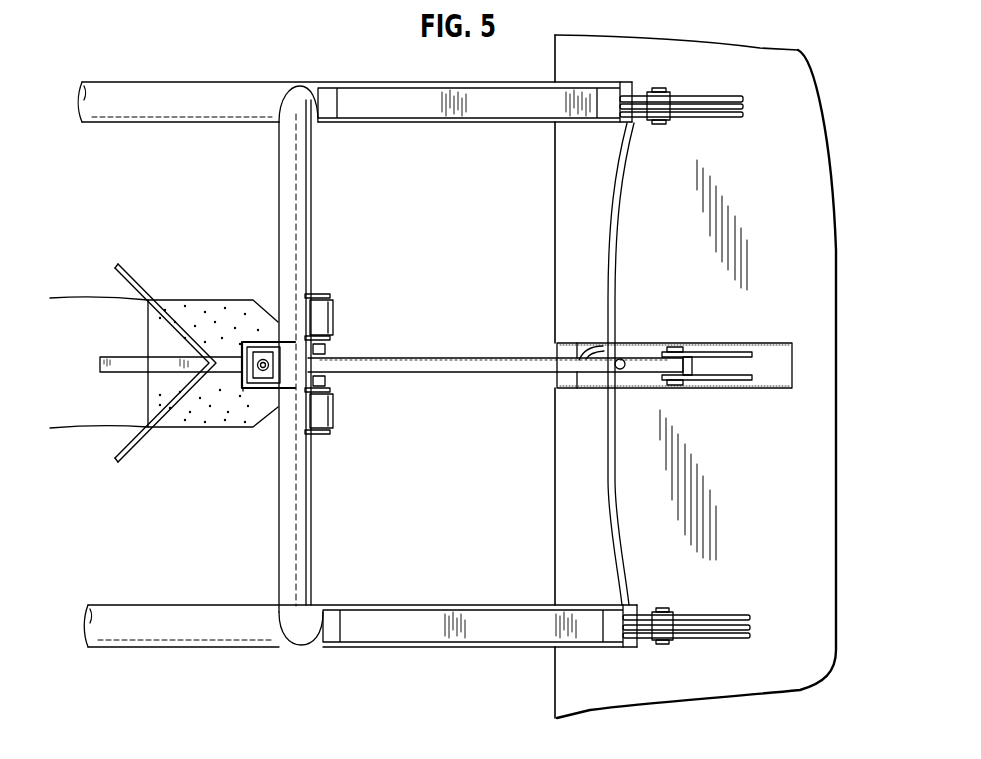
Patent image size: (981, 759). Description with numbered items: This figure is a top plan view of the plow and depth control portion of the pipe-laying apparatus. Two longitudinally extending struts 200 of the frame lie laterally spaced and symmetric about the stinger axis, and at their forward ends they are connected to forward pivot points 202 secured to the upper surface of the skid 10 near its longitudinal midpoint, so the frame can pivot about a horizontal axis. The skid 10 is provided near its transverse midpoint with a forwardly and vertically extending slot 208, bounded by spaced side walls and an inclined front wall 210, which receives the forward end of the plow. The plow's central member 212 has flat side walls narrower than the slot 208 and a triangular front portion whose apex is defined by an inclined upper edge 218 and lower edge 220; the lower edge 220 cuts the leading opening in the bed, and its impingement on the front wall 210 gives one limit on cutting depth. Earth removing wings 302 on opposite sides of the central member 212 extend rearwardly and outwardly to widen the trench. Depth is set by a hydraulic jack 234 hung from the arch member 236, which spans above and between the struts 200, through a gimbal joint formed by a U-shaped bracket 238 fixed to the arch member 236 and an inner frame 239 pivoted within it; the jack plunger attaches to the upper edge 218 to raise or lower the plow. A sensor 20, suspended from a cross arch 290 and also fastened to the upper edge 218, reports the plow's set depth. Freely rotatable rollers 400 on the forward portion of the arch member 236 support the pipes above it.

The skid 10 is at (786, 70).
The sensor 20 is at (623, 377).
The struts 200 is at (237, 88).
The forward pivot points 202 is at (657, 89).
The slot 208 is at (563, 381).
The front wall 210 is at (781, 374).
The central member 212 is at (126, 351).
The upper edge 218 is at (445, 365).
The lower edge 220 is at (693, 387).
The hydraulic jack 234 is at (252, 392).
The arch member 236 is at (311, 236).
The U-shaped bracket 238 is at (264, 337).
The frame 239 is at (250, 376).
The cross arch 290 is at (616, 238).
The earth removing wings 302 is at (234, 298).
The rollers 400 is at (337, 323).